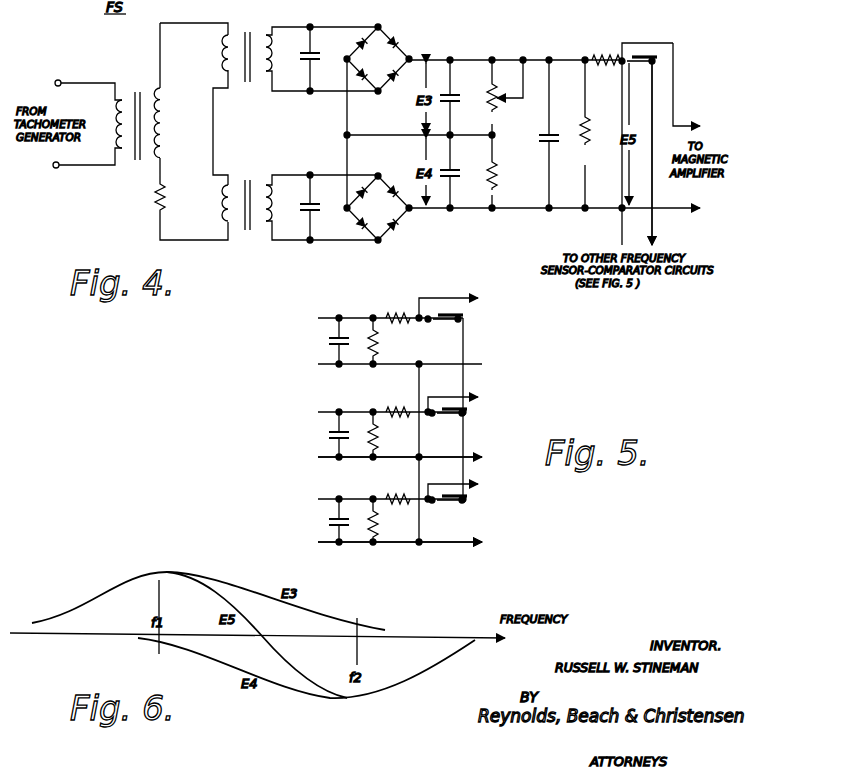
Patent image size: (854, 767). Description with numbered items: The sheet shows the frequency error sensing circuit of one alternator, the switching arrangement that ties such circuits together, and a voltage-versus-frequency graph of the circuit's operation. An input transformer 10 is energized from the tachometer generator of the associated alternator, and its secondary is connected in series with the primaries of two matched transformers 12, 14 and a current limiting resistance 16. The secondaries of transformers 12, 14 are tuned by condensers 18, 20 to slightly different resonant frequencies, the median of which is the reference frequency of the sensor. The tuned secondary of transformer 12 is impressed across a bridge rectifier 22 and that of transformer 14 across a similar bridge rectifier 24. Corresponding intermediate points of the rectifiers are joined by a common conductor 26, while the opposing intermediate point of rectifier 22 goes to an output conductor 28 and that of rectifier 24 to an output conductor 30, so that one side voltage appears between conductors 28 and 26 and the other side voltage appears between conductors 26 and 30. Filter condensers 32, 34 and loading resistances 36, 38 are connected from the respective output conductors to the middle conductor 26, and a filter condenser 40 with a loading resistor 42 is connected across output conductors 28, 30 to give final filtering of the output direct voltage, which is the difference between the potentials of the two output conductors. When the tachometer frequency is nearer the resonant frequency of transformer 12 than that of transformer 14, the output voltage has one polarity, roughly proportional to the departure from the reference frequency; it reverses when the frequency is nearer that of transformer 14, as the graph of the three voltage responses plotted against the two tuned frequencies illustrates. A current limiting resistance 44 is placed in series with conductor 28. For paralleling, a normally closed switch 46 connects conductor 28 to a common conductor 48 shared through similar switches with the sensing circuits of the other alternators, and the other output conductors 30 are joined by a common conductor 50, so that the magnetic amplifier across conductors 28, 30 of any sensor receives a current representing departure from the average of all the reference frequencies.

In FIG. 4, the input transformer 10 is at (135, 166).
In FIG. 4, the matched transformer 12 is at (246, 34).
In FIG. 4, the matched transformer 14 is at (242, 232).
In FIG. 4, the current limiting resistance 16 is at (157, 200).
In FIG. 4, the condenser 18 is at (312, 58).
In FIG. 4, the condenser 20 is at (312, 208).
In FIG. 4, the bridge rectifier 22 is at (391, 40).
In FIG. 4, the bridge rectifier 24 is at (390, 236).
In FIG. 4, the common conductor 26 is at (345, 118).
In FIG. 4, the output conductor 28 is at (467, 59).
In FIG. 5, the output conductor 28 is at (332, 317).
In FIG. 4, the output conductor 30 is at (470, 211).
In FIG. 5, the output conductor 30 is at (322, 363).
In FIG. 4, the filter condenser 32 is at (452, 98).
In FIG. 4, the filter condenser 34 is at (452, 178).
In FIG. 4, the loading resistance 36 is at (496, 111).
In FIG. 4, the loading resistance 38 is at (495, 176).
In FIG. 4, the filter condenser 40 is at (551, 134).
In FIG. 5, the filter condenser 40 is at (334, 340).
In FIG. 4, the loading resistor 42 is at (588, 150).
In FIG. 5, the loading resistor 42 is at (378, 341).
In FIG. 4, the current limiting resistance 44 is at (602, 58).
In FIG. 5, the current limiting resistance 44 is at (398, 315).
In FIG. 4, the normally closed switch 46 is at (649, 56).
In FIG. 5, the normally closed switch 46 is at (455, 312).
In FIG. 5, the common conductor 48 is at (465, 341).
In FIG. 5, the common conductor 50 is at (421, 441).